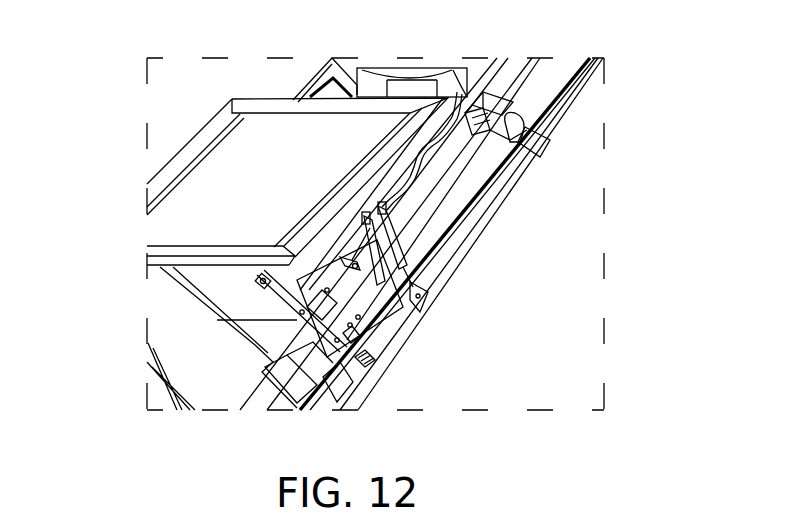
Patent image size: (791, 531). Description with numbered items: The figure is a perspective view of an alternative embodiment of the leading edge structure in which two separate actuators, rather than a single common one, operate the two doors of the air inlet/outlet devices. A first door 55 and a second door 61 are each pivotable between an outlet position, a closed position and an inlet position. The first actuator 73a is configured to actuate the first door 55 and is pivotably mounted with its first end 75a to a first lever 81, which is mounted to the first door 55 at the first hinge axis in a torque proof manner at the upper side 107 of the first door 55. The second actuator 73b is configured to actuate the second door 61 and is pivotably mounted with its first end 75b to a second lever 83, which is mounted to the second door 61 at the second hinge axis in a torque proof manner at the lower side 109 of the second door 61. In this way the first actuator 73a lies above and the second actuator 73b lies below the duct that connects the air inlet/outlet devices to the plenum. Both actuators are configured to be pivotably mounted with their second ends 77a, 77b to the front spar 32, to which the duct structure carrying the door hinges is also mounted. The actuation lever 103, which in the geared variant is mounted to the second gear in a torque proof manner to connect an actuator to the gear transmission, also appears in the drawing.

The front spar 32 is at (473, 252).
The first door 55 is at (312, 92).
The second door 61 is at (273, 190).
The lower side 109 is at (245, 263).
The upper side 107 is at (350, 82).
The first lever 81 is at (360, 67).
The actuation lever 103 is at (453, 83).
The first end 75a is at (490, 60).
The first actuator 73a is at (527, 130).
The second end 77a is at (545, 140).
The second lever 83 is at (258, 277).
The first end 75b is at (255, 305).
The second end 77b is at (370, 365).
The second actuator 73b is at (335, 320).